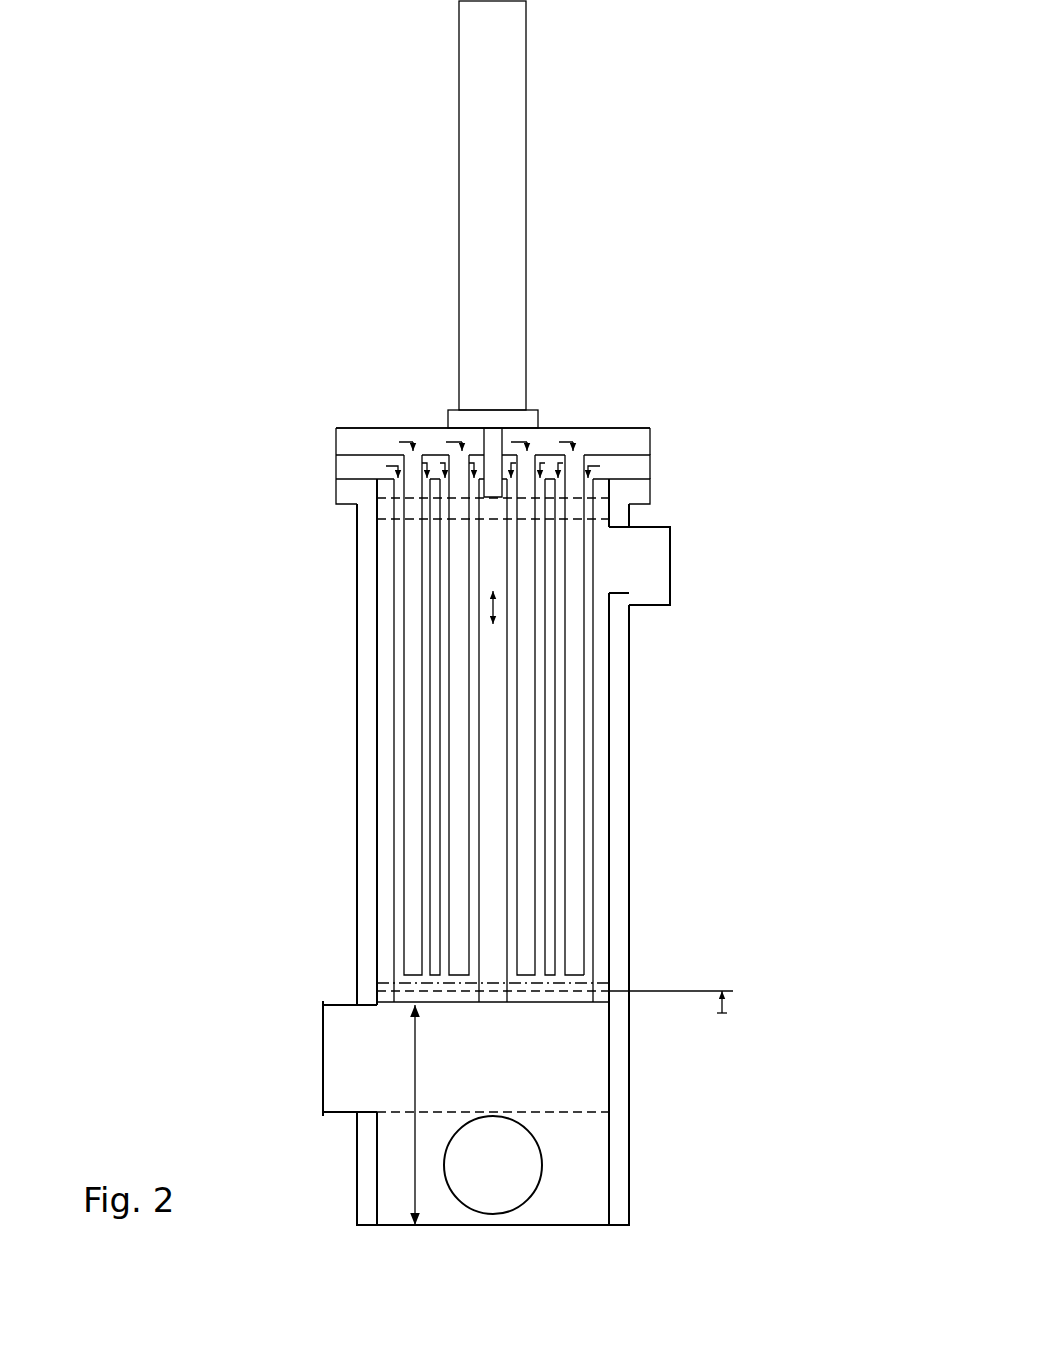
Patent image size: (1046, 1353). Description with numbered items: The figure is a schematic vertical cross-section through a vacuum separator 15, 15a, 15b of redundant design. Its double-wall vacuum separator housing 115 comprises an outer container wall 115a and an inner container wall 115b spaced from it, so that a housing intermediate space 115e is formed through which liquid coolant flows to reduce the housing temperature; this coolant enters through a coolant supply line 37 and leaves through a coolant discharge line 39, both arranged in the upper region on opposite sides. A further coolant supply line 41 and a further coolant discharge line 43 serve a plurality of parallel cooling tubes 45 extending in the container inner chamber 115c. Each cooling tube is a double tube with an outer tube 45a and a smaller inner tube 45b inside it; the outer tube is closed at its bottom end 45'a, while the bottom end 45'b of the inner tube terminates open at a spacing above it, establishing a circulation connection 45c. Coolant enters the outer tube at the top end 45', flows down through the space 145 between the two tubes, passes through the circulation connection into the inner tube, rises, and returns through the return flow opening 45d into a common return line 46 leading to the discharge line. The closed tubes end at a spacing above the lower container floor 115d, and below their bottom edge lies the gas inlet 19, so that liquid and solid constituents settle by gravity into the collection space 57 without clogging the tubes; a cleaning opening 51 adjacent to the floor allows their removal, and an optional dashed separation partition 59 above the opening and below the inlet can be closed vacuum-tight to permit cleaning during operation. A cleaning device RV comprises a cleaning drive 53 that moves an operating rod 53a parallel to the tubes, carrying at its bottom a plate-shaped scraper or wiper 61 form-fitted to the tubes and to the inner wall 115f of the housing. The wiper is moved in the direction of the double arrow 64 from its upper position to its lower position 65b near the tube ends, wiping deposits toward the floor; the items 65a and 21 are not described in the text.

The cleaning device RV is at (366, 317).
The vacuum separator 15 is at (688, 321).
The vacuum separator 15a is at (519, 515).
The vacuum separator 15b is at (515, 873).
The cleaning drive 53 is at (528, 366).
The operating rod 53a is at (494, 441).
The further coolant discharge line 43 is at (334, 440).
The further coolant supply line 41 is at (334, 466).
The coolant supply line 37 is at (334, 494).
The coolant discharge line 39 is at (652, 491).
The common return line 46 is at (385, 441).
The cooling tubes 45 is at (582, 728).
The outer tube 45a is at (594, 703).
The inner tube 45b is at (586, 672).
The circulation connection 45c is at (528, 976).
The return flow opening 45d is at (576, 452).
The top end of the cooling tubes 45' is at (675, 438).
The bottom end of the outer tube 45'a is at (579, 1027).
The bottom end of the inner tube 45'b is at (579, 950).
The upper seal line 65a is at (603, 495).
The lower position 65b is at (504, 1003).
The scraper or wiper 61 is at (599, 509).
The upper port 21 is at (673, 555).
The double arrow 64 is at (498, 608).
The space 145 is at (592, 640).
The vacuum separator housing 115 is at (355, 823).
The outer container wall 115a is at (355, 880).
The inner container wall 115b is at (374, 927).
The container inner chamber 115c is at (437, 776).
The lower container floor 115d is at (584, 1227).
The housing intermediate space 115e is at (374, 727).
The inner wall of the vacuum separator housing 115f is at (380, 757).
The gas inlet 19 is at (321, 1058).
The separation partition 59 is at (576, 1113).
The collection space 57 is at (579, 1168).
The cleaning opening 51 is at (493, 1216).